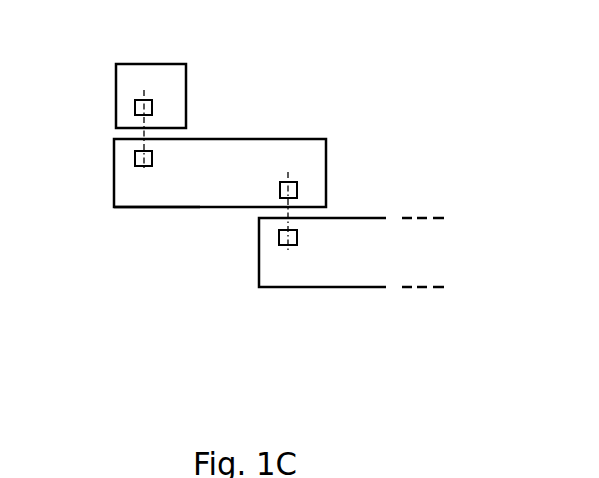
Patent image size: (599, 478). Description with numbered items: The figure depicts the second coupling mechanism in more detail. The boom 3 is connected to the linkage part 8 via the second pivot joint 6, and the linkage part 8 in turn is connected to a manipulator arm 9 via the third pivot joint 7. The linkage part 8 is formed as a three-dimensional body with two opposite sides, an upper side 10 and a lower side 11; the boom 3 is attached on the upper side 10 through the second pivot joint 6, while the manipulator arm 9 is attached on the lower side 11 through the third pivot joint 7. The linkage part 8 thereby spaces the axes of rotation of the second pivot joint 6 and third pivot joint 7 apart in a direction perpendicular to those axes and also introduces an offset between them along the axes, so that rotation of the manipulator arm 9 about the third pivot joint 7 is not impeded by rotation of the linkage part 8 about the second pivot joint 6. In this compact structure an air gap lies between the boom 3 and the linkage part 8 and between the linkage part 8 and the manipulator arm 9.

The boom 3 is at (127, 75).
The second pivot joint 6 is at (137, 107).
The third pivot joint 7 is at (290, 240).
The linkage part 8 is at (218, 147).
The manipulator arm 9 is at (270, 275).
The upper side 10 is at (272, 137).
The lower side 11 is at (155, 208).